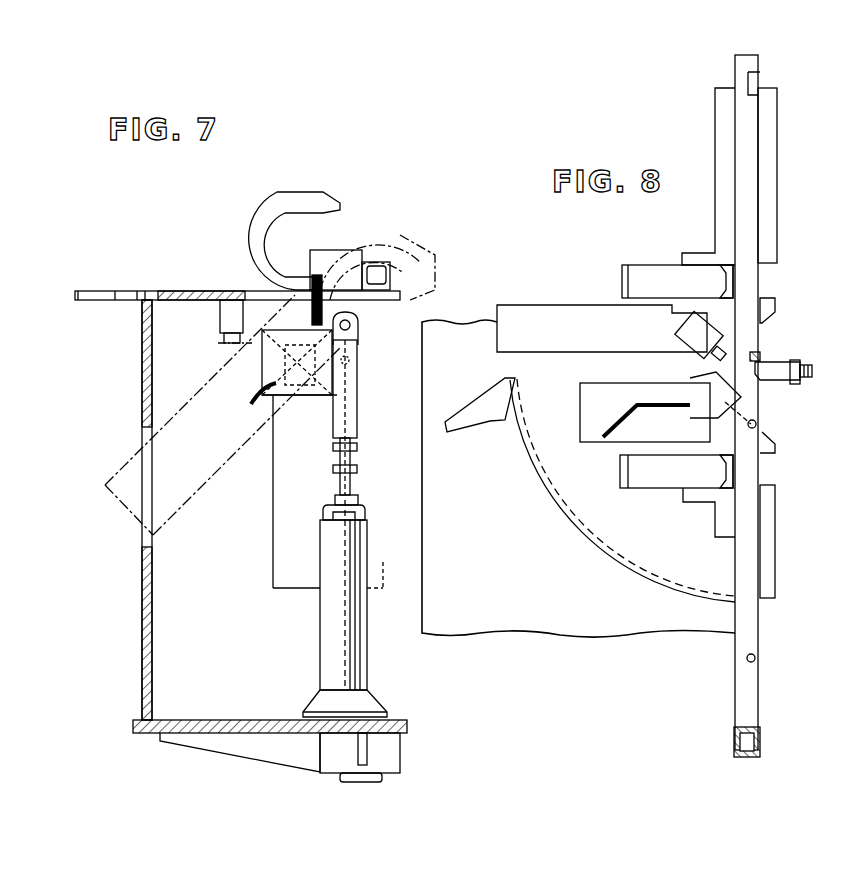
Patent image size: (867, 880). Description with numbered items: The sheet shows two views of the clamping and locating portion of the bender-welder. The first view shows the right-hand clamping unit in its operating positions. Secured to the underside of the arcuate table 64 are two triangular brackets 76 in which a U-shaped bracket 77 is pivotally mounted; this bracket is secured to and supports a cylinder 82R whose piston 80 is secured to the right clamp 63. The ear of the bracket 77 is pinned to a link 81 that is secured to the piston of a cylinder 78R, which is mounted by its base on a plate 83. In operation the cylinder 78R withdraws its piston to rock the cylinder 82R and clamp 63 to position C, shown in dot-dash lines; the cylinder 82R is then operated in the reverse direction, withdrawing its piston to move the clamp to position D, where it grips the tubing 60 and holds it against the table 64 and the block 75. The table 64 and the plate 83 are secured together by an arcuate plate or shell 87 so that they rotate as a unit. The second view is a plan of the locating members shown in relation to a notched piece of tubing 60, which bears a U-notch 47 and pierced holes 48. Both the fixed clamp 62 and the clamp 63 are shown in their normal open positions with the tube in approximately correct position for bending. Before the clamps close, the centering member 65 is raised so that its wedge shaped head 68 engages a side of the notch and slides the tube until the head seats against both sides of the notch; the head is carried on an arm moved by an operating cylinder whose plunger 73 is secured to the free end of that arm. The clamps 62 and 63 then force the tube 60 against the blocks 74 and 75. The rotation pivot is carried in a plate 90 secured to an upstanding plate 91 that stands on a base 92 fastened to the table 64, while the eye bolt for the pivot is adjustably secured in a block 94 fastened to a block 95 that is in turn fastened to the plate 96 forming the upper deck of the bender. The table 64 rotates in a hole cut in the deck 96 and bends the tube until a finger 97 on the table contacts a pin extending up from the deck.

In FIG. 8, the U-notch 47 is at (760, 70).
In FIG. 8, the pierced holes 48 is at (757, 425).
In FIG. 7, the tubing 60 is at (392, 275).
In FIG. 8, the tubing 60 is at (760, 280).
In FIG. 8, the fixed clamp 62 is at (622, 272).
In FIG. 7, the clamp 63 is at (268, 212).
In FIG. 8, the clamp 63 is at (622, 472).
In FIG. 7, the rotatable table 64 is at (240, 292).
In FIG. 8, the rotatable table 64 is at (630, 565).
In FIG. 8, the centering member 65 is at (812, 364).
In FIG. 8, the wedge shaped head 68 is at (770, 362).
In FIG. 8, the plunger 73 is at (800, 406).
In FIG. 8, the block 74 is at (715, 120).
In FIG. 7, the block 75 is at (346, 250).
In FIG. 8, the block 75 is at (715, 520).
In FIG. 7, the triangular brackets 76 is at (222, 318).
In FIG. 7, the U-shaped bracket 77 is at (262, 348).
In FIG. 7, the cylinder 78R is at (320, 650).
In FIG. 7, the piston 80 is at (360, 362).
In FIG. 7, the link 81 is at (358, 405).
In FIG. 7, the cylinder 82R is at (273, 521).
In FIG. 7, the plate 83 is at (262, 720).
In FIG. 7, the arcuate plate or shell 87 is at (142, 586).
In FIG. 8, the arcuate plate or shell 87 is at (560, 520).
In FIG. 8, the plate 90 is at (710, 393).
In FIG. 8, the upstanding plate 91 is at (610, 425).
In FIG. 8, the base 92 is at (582, 396).
In FIG. 8, the block 94 is at (685, 328).
In FIG. 8, the block 95 is at (548, 305).
In FIG. 8, the plate 96 is at (600, 632).
In FIG. 7, the finger 97 is at (86, 298).
In FIG. 8, the finger 97 is at (476, 432).
In FIG. 7, the position C is at (414, 228).
In FIG. 7, the position D is at (420, 283).